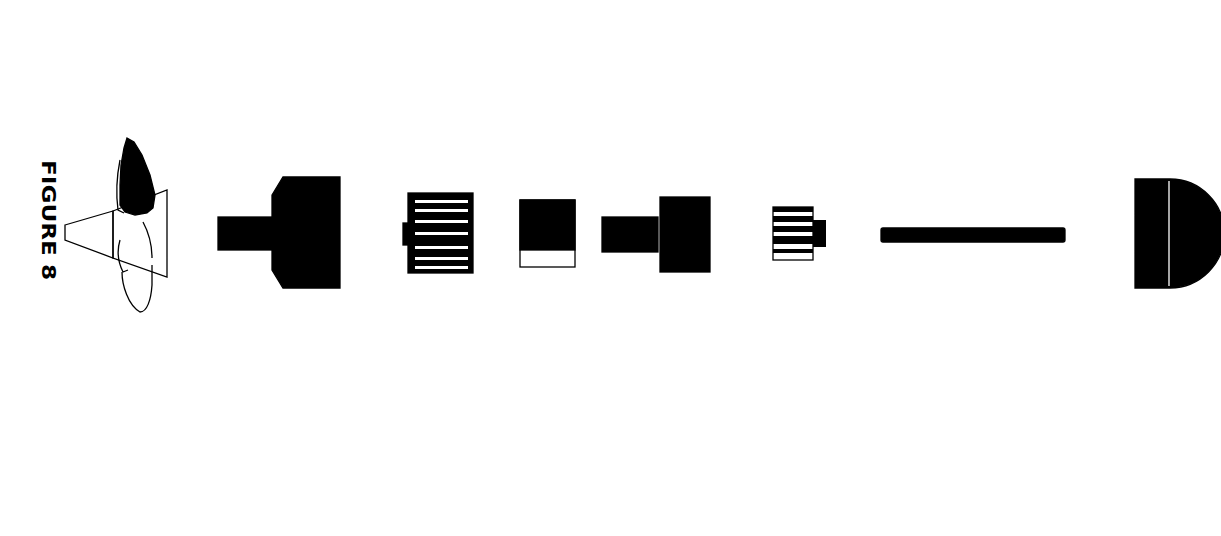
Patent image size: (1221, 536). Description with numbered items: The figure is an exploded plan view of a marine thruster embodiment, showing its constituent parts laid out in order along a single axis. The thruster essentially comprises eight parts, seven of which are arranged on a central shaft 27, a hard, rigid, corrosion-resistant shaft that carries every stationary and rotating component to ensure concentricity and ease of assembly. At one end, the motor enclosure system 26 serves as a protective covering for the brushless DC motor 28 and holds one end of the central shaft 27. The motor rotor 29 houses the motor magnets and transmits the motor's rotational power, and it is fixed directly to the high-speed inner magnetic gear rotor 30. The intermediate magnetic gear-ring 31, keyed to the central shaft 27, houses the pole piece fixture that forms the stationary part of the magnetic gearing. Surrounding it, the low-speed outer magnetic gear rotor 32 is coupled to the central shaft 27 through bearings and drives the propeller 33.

The motor enclosure system 26 is at (1157, 292).
The central shaft 27 is at (960, 242).
The brushless DC motor 28 is at (738, 158).
The motor rotor 29 is at (683, 275).
The high-speed inner magnetic gear rotor 30 is at (545, 272).
The intermediate magnetic gear-ring 31 is at (440, 280).
The low-speed outer magnetic gear rotor 32 is at (317, 293).
The propeller 33 is at (152, 298).